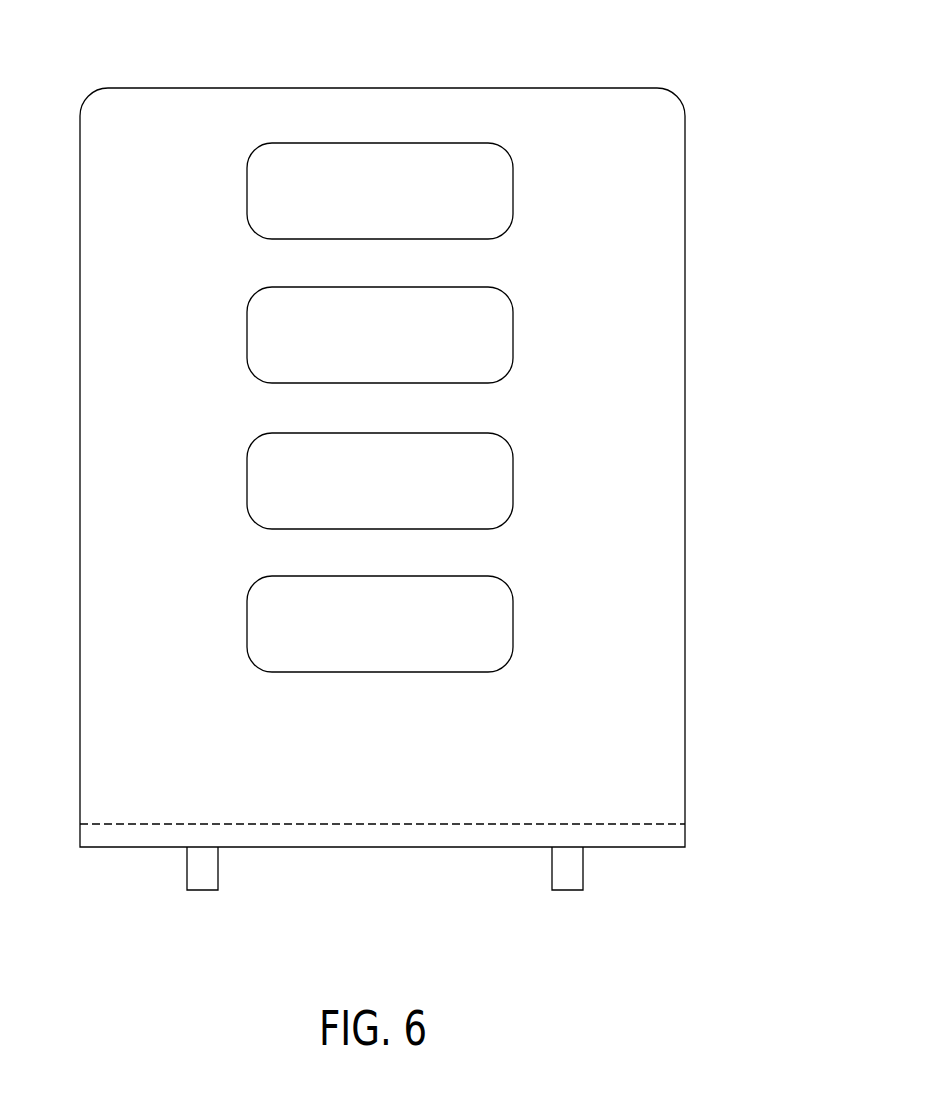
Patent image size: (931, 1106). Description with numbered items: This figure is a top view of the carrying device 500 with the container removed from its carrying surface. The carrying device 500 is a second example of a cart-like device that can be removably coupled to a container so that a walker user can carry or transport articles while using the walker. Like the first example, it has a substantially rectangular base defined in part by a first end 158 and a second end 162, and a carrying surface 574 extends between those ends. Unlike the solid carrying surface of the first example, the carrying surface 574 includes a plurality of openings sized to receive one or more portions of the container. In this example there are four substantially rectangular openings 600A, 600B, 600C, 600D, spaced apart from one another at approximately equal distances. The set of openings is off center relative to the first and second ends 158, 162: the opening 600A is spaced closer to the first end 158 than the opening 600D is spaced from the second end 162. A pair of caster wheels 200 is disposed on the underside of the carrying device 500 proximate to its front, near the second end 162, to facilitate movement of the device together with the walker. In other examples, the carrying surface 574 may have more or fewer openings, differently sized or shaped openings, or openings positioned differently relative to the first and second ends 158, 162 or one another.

The carrying device 500 is at (748, 97).
The first end 158 is at (353, 88).
The carrying surface 574 is at (387, 760).
The second end 162 is at (652, 847).
The opening 600A is at (378, 143).
The opening 600B is at (378, 287).
The opening 600C is at (378, 433).
The opening 600D is at (378, 576).
The caster wheels 200 is at (208, 890).